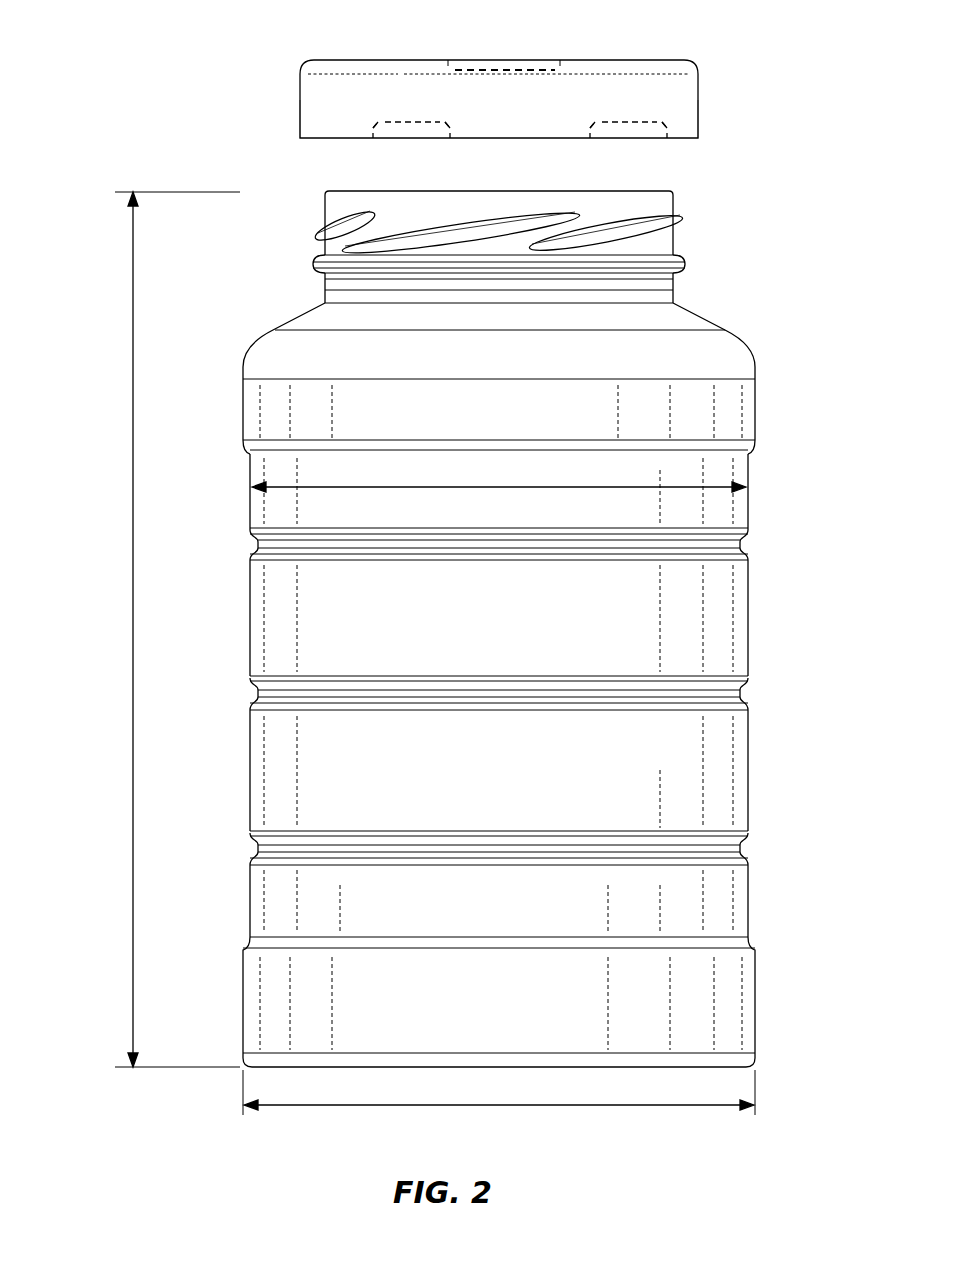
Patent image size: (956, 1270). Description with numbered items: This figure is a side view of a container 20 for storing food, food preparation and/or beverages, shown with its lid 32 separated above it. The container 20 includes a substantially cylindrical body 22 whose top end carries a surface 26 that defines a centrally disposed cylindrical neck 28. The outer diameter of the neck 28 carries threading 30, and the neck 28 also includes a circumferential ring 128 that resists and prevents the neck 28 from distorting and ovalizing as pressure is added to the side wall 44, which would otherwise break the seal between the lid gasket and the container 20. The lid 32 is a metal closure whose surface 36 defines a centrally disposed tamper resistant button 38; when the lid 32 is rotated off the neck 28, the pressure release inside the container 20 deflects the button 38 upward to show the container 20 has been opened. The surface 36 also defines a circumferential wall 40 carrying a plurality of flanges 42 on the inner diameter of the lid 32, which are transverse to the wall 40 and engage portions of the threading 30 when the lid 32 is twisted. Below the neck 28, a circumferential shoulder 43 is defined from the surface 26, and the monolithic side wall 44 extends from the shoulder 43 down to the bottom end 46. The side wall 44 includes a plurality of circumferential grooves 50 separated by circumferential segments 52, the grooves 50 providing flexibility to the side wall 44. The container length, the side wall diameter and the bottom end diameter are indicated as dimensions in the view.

The container 20 is at (93, 214).
The body 22 is at (500, 634).
The surface 26 is at (650, 212).
The neck 28 is at (325, 206).
The threading 30 is at (668, 233).
The lid 32 is at (487, 70).
The surface 36 is at (670, 67).
The button 38 is at (505, 58).
The circumferential wall 40 is at (632, 93).
The flanges 42 is at (373, 128).
The shoulder 43 is at (258, 342).
The side wall 44 is at (750, 607).
The bottom end 46 is at (718, 1055).
The grooves 50 is at (258, 543).
The segments 52 is at (268, 625).
The circumferential ring 128 is at (690, 268).